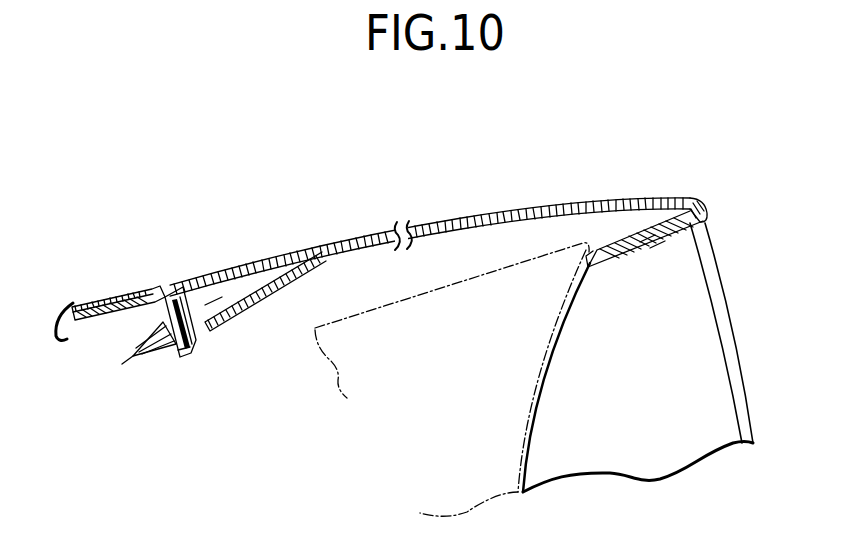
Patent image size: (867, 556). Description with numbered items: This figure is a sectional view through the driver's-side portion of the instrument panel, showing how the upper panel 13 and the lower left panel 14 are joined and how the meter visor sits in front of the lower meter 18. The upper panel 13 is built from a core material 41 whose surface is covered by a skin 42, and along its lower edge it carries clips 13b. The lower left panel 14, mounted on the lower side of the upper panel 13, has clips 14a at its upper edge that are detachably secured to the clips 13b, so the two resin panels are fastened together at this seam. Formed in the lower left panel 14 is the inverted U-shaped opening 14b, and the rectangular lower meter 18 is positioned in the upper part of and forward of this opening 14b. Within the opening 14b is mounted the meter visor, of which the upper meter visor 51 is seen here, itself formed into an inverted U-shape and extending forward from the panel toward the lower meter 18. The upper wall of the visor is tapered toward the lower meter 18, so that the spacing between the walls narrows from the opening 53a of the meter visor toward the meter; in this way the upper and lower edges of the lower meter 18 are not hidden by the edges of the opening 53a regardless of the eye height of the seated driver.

The upper panel 13 is at (117, 288).
The clip 13b is at (179, 358).
The lower left panel 14 is at (452, 221).
The clip 14a is at (149, 358).
The inverted U-shaped opening 14b is at (704, 214).
The lower meter 18 is at (406, 299).
The core material 41 is at (93, 328).
The skin 42 is at (93, 311).
The upper meter visor 51 is at (617, 228).
The opening of the meter visor 53a is at (717, 332).